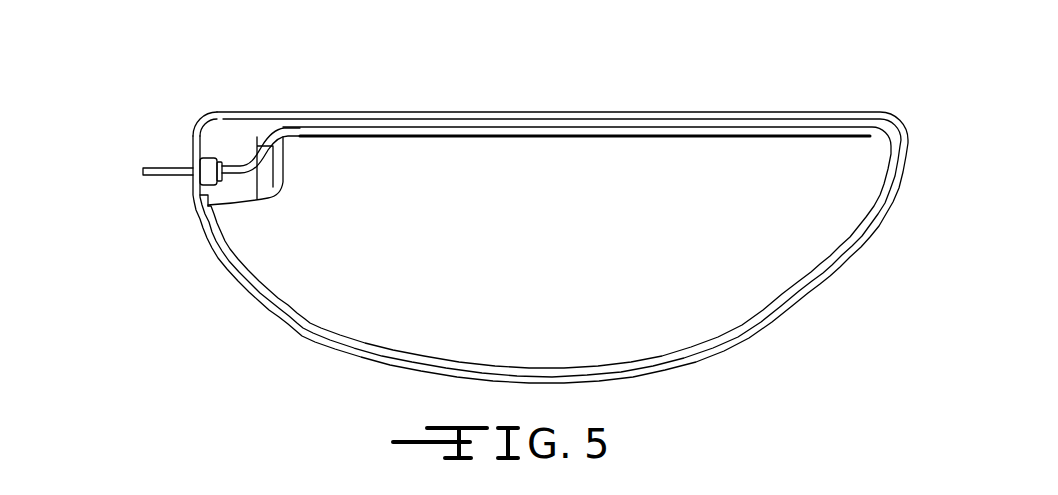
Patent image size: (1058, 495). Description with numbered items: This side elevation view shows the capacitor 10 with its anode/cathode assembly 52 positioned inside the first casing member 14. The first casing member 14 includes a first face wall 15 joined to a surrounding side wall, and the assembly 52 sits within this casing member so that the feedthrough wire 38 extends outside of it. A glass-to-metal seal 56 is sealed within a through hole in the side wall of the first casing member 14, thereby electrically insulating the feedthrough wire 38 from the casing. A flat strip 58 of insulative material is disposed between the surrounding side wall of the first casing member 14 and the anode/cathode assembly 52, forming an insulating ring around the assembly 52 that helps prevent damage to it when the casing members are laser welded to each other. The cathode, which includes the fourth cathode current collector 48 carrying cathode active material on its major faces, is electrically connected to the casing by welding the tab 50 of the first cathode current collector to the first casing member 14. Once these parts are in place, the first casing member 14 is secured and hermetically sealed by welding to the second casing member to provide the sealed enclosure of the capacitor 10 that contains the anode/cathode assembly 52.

The capacitor 10 is at (548, 84).
The first casing member 14 is at (216, 131).
The first face wall 15 is at (190, 186).
The feedthrough wire 38 is at (160, 167).
The fourth cathode current collector 48 is at (625, 167).
The tab 50 is at (255, 140).
The anode/cathode assembly 52 is at (874, 130).
The glass-to-metal seal 56 is at (210, 163).
The flat strip 58 is at (266, 125).